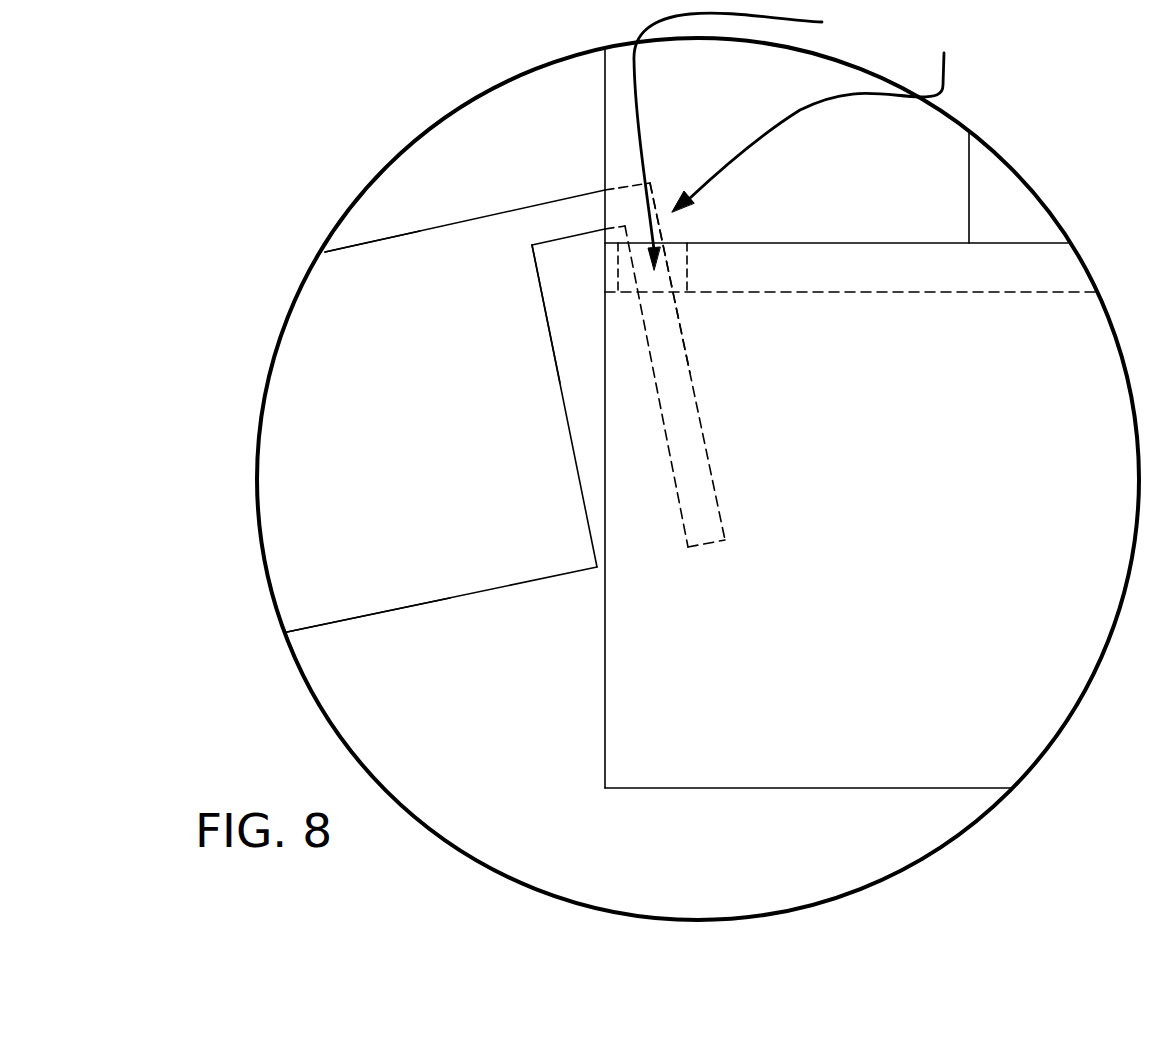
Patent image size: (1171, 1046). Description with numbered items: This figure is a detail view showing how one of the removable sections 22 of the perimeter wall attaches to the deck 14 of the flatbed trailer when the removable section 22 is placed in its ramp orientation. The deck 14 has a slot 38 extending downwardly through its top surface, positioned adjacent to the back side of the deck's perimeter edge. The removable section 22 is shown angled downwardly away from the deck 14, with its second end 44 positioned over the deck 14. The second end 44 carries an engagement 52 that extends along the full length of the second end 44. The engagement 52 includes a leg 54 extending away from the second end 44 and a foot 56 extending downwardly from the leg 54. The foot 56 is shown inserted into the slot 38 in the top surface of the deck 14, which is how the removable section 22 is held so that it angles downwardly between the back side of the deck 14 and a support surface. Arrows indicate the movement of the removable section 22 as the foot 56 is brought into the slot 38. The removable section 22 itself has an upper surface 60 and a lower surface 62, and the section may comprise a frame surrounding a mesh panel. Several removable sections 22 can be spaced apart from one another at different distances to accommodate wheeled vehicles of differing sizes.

The deck 14 is at (930, 243).
The removable section 22 is at (420, 222).
The slot 38 is at (754, 136).
The second end 44 is at (541, 287).
The engagement 52 is at (820, 112).
The leg 54 is at (579, 200).
The foot 56 is at (678, 313).
The upper surface 60 is at (363, 243).
The lower surface 62 is at (343, 622).